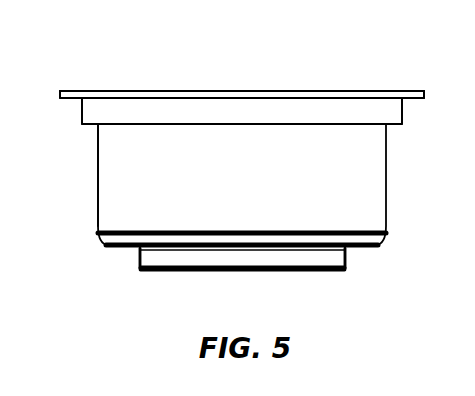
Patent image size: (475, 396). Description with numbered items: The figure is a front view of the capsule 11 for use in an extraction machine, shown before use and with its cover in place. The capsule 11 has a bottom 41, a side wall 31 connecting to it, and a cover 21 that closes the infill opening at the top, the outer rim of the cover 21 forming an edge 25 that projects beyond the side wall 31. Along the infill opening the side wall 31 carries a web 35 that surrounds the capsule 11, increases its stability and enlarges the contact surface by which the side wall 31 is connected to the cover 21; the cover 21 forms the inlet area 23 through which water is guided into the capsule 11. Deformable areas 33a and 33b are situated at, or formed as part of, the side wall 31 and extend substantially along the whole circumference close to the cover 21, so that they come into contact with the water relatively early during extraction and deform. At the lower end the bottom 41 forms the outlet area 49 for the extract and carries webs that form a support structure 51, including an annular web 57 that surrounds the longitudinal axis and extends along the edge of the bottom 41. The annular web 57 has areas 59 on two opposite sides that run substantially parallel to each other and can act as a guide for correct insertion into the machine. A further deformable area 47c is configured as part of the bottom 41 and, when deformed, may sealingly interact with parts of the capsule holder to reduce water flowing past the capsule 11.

The capsule 11 is at (131, 70).
The cover 21 is at (293, 90).
The inlet area 23 is at (243, 84).
The outer edge of flange 25 is at (412, 101).
The side wall 31 is at (355, 192).
The deformable area 33a is at (104, 148).
The deformable area 33b is at (374, 107).
The web 35 is at (82, 112).
The bottom 41 is at (355, 265).
The deformable area 47c is at (190, 258).
The outlet area 49 is at (243, 280).
The support structure 51 is at (300, 272).
The annular web 57 is at (152, 257).
The areas of annular web 59 is at (345, 253).